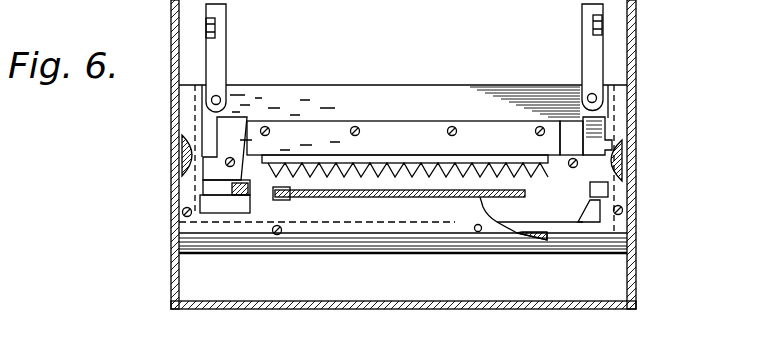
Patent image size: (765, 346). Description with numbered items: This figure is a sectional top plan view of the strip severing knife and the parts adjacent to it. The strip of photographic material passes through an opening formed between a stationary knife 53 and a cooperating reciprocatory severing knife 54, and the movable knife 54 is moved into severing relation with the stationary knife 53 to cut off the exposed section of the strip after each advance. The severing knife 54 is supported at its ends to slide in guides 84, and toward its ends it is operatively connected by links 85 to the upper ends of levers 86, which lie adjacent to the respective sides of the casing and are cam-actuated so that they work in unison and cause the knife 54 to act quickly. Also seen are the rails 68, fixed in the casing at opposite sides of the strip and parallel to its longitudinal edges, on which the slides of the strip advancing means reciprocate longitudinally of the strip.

The guides 84 is at (180, 130).
The links 85 is at (221, 52).
The levers 86 is at (215, 25).
The rails 68 is at (239, 180).
The reciprocatory severing knife 54 is at (392, 166).
The stationary knife 53 is at (470, 212).